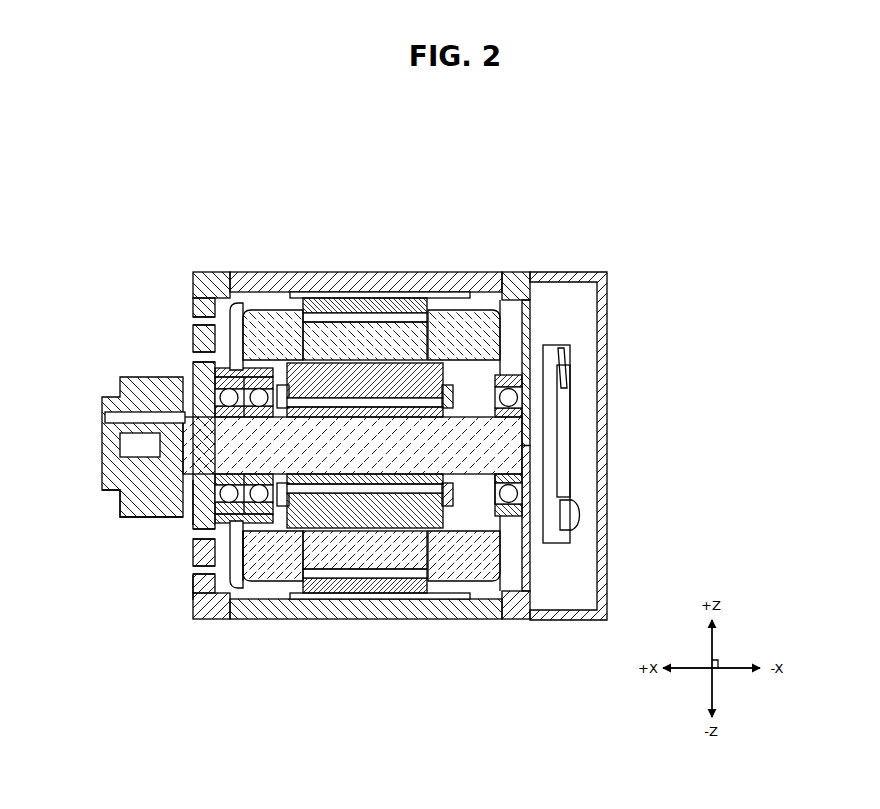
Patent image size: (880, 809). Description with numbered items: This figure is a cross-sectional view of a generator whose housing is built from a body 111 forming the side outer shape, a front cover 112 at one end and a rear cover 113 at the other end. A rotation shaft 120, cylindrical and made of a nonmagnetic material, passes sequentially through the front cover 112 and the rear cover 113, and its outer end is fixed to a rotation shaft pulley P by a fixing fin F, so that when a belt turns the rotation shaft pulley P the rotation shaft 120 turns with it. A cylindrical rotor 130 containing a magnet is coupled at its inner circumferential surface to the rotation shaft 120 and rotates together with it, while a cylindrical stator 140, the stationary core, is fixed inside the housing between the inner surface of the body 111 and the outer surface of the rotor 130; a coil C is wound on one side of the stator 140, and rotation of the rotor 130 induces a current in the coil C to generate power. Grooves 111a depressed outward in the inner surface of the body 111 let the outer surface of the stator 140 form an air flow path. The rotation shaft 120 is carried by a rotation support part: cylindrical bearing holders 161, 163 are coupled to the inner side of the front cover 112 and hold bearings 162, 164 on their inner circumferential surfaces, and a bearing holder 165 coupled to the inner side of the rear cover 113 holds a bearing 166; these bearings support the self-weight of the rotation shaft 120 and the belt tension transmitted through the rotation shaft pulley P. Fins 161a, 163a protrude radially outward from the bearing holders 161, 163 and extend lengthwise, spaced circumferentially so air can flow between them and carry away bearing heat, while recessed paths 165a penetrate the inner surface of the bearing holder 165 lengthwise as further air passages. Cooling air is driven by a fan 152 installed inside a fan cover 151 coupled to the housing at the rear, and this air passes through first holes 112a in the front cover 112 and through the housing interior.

The body 111 is at (363, 272).
The grooves 111a is at (412, 272).
The front cover 112 is at (197, 272).
The first holes 112a is at (199, 360).
The rear cover 113 is at (515, 272).
The rotation shaft 120 is at (170, 450).
The rotor 130 is at (400, 527).
The stator 140 is at (363, 548).
The fan cover 151 is at (568, 272).
The fan 152 is at (580, 512).
The bearing holder 161 is at (235, 385).
The fins 161a is at (223, 368).
The bearing 162 is at (207, 502).
The bearing holder 163 is at (257, 517).
The fins 163a is at (253, 512).
The bearing 164 is at (196, 580).
The bearing holder 165 is at (560, 352).
The paths 165a is at (545, 378).
The bearing 166 is at (505, 512).
The fixing fin F is at (110, 418).
The rotation shaft pulley P is at (137, 497).
The coil C is at (295, 547).